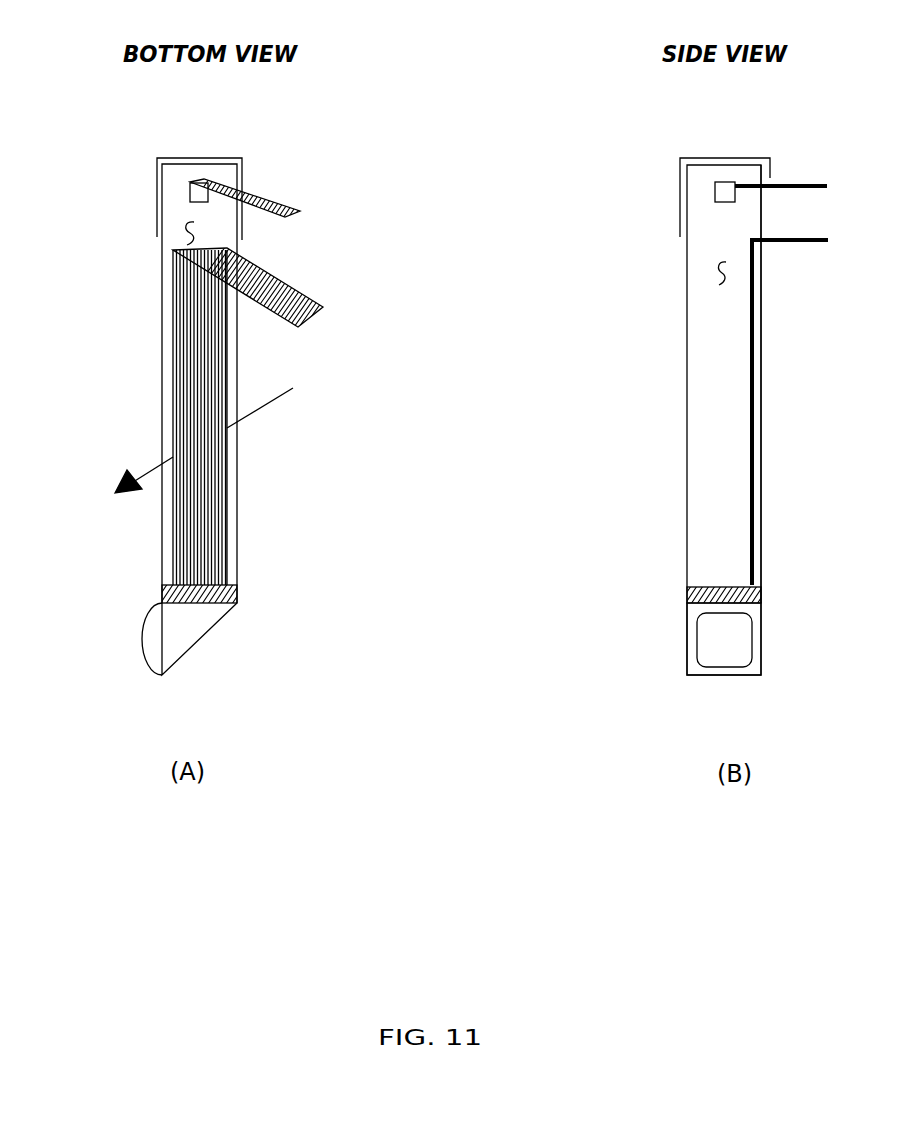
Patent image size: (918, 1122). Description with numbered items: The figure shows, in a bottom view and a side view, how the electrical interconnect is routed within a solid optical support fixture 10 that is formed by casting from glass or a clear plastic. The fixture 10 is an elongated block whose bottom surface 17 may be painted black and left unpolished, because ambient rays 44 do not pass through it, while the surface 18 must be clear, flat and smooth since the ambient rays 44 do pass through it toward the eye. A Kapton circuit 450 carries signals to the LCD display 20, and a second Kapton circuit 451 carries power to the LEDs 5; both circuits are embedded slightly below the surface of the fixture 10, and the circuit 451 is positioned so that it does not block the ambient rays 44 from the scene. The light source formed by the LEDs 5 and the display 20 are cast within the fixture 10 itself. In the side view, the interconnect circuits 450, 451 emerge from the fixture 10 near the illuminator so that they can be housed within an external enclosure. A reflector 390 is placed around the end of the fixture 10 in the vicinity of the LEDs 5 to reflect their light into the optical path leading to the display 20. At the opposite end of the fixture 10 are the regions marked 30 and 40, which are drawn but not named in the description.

In FIG. 11A, the LEDs 5 is at (187, 192).
In FIG. 11B, the LEDs 5 is at (712, 192).
In FIG. 11B, the optical support fixture 10 is at (705, 423).
In FIG. 11A, the bottom surface 17 is at (186, 233).
In FIG. 11B, the bottom surface 17 is at (762, 532).
In FIG. 11B, the surface 18 is at (718, 273).
In FIG. 11A, the display 20 is at (157, 588).
In FIG. 11B, the display 20 is at (687, 590).
In FIG. 11A, the bottom block 30 is at (187, 637).
In FIG. 11B, the bottom block 30 is at (762, 647).
In FIG. 11A, the foot 40 is at (133, 639).
In FIG. 11B, the foot 40 is at (723, 638).
In FIG. 11A, the ambient rays 44 is at (140, 469).
In FIG. 11A, the reflector 390 is at (177, 157).
In FIG. 11B, the reflector 390 is at (702, 157).
In FIG. 11A, the Kapton circuit 450 is at (307, 302).
In FIG. 11B, the Kapton circuit 450 is at (790, 243).
In FIG. 11A, the Kapton circuit 451 is at (290, 207).
In FIG. 11B, the Kapton circuit 451 is at (807, 181).